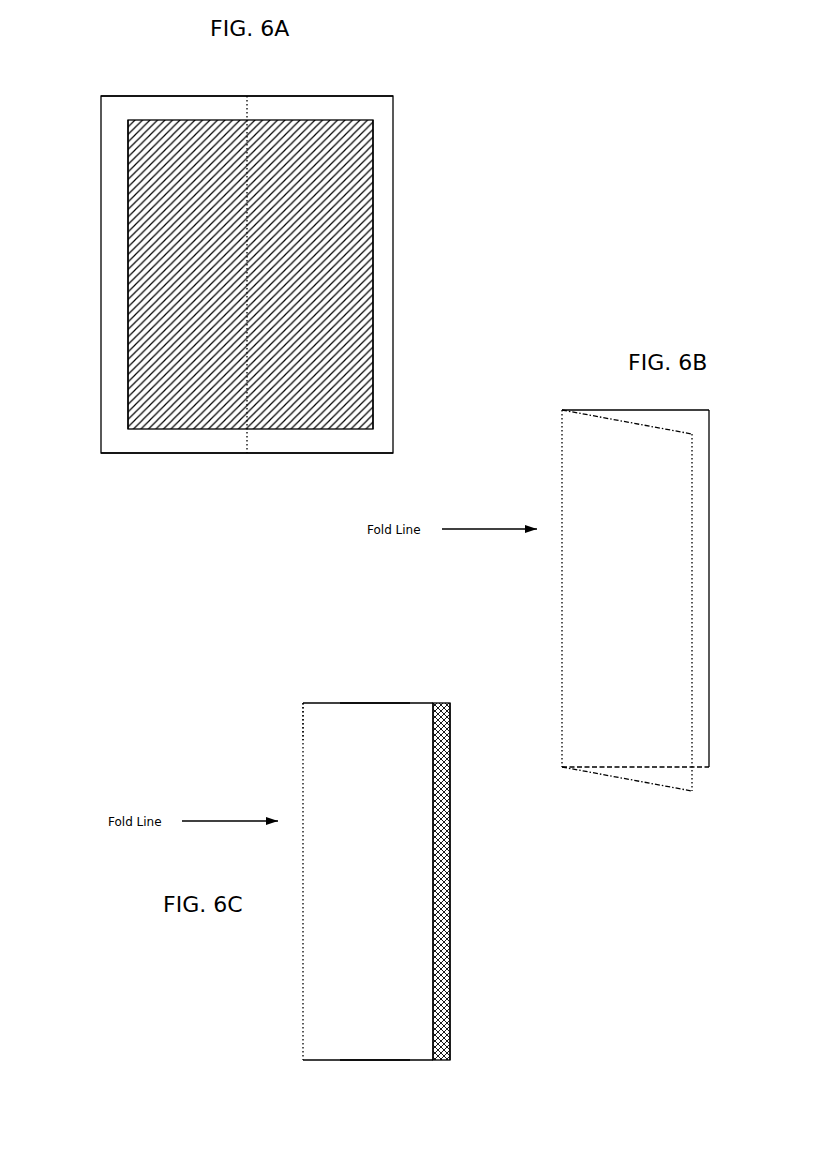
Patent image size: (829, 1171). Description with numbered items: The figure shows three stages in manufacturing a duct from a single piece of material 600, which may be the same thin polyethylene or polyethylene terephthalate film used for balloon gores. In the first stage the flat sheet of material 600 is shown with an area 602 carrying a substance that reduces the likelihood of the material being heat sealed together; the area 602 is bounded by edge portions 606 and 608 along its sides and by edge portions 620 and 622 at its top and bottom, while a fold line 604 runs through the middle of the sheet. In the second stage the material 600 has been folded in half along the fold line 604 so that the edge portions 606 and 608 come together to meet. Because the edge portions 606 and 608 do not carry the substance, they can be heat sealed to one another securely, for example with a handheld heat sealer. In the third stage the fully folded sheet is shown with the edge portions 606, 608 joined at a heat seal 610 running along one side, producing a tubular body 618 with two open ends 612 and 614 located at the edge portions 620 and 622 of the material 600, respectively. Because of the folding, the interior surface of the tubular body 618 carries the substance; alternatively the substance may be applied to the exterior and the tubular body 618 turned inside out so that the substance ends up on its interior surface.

In FIG. 6A, the material 600 is at (393, 250).
In FIG. 6A, the area 602 is at (373, 179).
In FIG. 6A, the fold line 604 is at (247, 239).
In FIG. 6B, the fold line 604 is at (562, 489).
In FIG. 6C, the fold line 604 is at (303, 774).
In FIG. 6A, the edge portion 606 is at (380, 214).
In FIG. 6B, the edge portion 606 is at (709, 548).
In FIG. 6C, the edge portion 606 is at (450, 833).
In FIG. 6A, the edge portion 608 is at (113, 191).
In FIG. 6B, the edge portion 608 is at (692, 493).
In FIG. 6C, the edge portion 608 is at (492, 881).
In FIG. 6C, the heat seal 610 is at (450, 779).
In FIG. 6C, the open end 612 is at (376, 703).
In FIG. 6C, the open end 614 is at (377, 1060).
In FIG. 6C, the tubular body 618 is at (303, 707).
In FIG. 6A, the edge portion 620 is at (340, 107).
In FIG. 6B, the edge portion 620 is at (602, 410).
In FIG. 6C, the edge portion 620 is at (317, 703).
In FIG. 6A, the edge portion 622 is at (162, 440).
In FIG. 6B, the edge portion 622 is at (674, 787).
In FIG. 6C, the edge portion 622 is at (316, 1062).